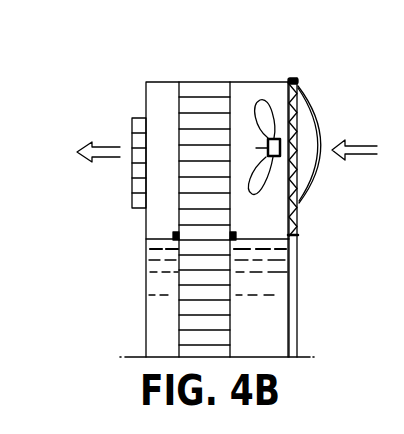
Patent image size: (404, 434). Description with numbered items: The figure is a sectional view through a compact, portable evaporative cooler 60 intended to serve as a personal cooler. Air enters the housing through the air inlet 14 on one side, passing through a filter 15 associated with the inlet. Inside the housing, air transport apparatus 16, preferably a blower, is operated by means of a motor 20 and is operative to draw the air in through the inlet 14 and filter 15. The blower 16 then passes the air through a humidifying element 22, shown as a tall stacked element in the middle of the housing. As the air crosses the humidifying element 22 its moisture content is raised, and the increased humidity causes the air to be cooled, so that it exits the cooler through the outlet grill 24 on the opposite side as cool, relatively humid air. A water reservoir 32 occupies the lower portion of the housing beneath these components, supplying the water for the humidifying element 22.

The air inlet 14 is at (323, 143).
The filter 15 is at (301, 135).
The air transport apparatus 16 is at (262, 100).
The motor 20 is at (275, 157).
The humidifying element 22 is at (204, 103).
The outlet grill 24 is at (140, 118).
The water reservoir 32 is at (277, 291).
The evaporative cooler 60 is at (353, 27).